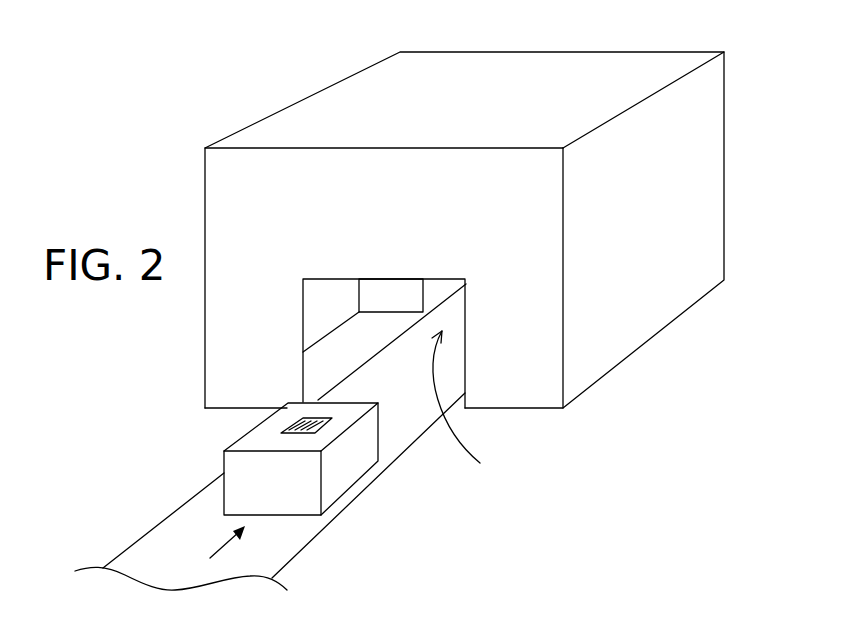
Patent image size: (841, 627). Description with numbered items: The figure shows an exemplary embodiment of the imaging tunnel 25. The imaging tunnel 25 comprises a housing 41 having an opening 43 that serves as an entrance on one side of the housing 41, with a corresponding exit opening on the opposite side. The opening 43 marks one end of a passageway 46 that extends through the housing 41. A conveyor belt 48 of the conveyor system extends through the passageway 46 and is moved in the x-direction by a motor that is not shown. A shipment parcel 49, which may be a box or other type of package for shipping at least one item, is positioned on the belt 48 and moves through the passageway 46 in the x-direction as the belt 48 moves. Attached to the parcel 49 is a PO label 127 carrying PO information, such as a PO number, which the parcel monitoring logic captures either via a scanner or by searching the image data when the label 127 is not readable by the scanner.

The imaging tunnel 25 is at (208, 79).
The housing 41 is at (543, 51).
The opening 43 is at (465, 320).
The passageway 46 is at (468, 404).
The conveyor belt 48 is at (308, 547).
The shipment parcel 49 is at (230, 446).
The PO label 127 is at (323, 423).